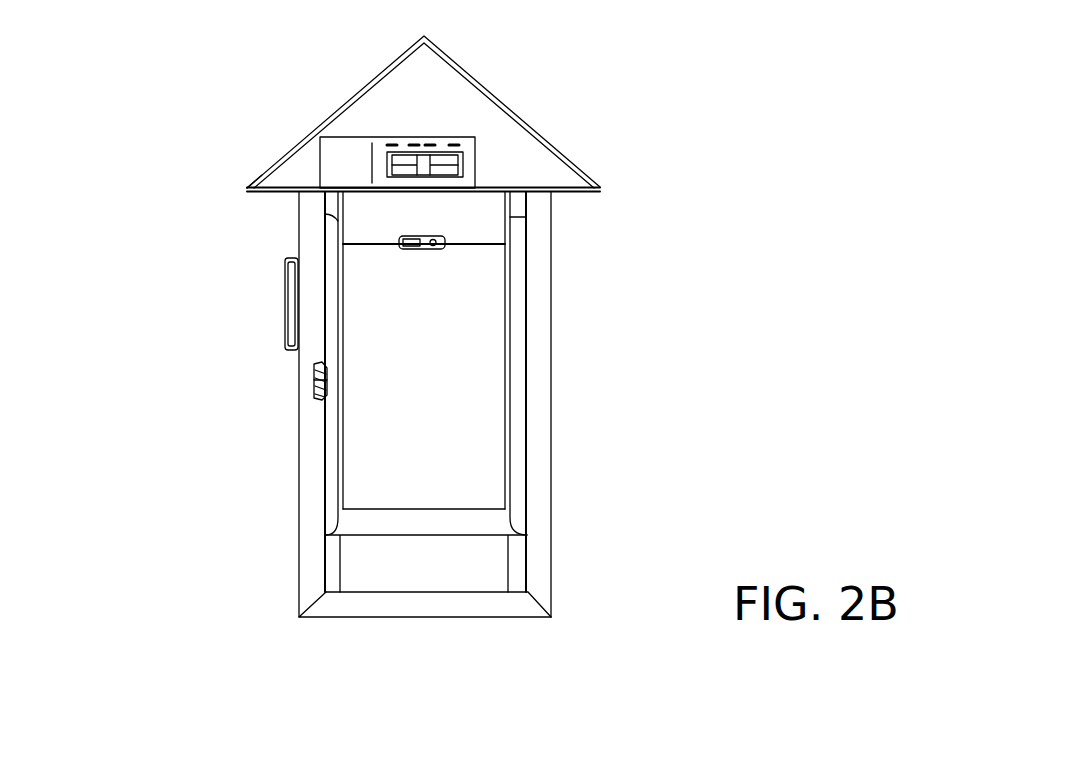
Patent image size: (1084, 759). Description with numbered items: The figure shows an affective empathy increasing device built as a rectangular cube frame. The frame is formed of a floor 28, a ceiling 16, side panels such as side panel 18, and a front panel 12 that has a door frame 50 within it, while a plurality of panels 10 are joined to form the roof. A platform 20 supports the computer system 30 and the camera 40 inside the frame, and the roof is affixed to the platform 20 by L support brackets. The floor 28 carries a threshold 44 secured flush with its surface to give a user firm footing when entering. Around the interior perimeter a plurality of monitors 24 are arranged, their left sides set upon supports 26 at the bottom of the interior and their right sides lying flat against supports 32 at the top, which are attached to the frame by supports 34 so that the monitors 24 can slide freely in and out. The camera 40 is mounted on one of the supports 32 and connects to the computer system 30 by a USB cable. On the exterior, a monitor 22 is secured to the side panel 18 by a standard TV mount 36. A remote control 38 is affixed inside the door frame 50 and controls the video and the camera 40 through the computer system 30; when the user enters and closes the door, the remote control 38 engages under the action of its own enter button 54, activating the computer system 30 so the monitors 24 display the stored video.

The panels 10 is at (354, 97).
The front panel 12 is at (537, 403).
The ceiling 16 is at (600, 186).
The side panel 18 is at (315, 440).
The platform 20 is at (247, 189).
The monitor 22 is at (293, 301).
The monitors 24 is at (340, 417).
The supports 26 is at (407, 568).
The floor 28 is at (528, 595).
The computer system 30 is at (469, 162).
The supports 32 is at (343, 233).
The supports 34 is at (332, 218).
The TV mount 36 is at (300, 332).
The remote control 38 is at (315, 392).
The camera 40 is at (400, 245).
The threshold 44 is at (338, 607).
The door frame 50 is at (330, 498).
The enter button 54 is at (313, 380).